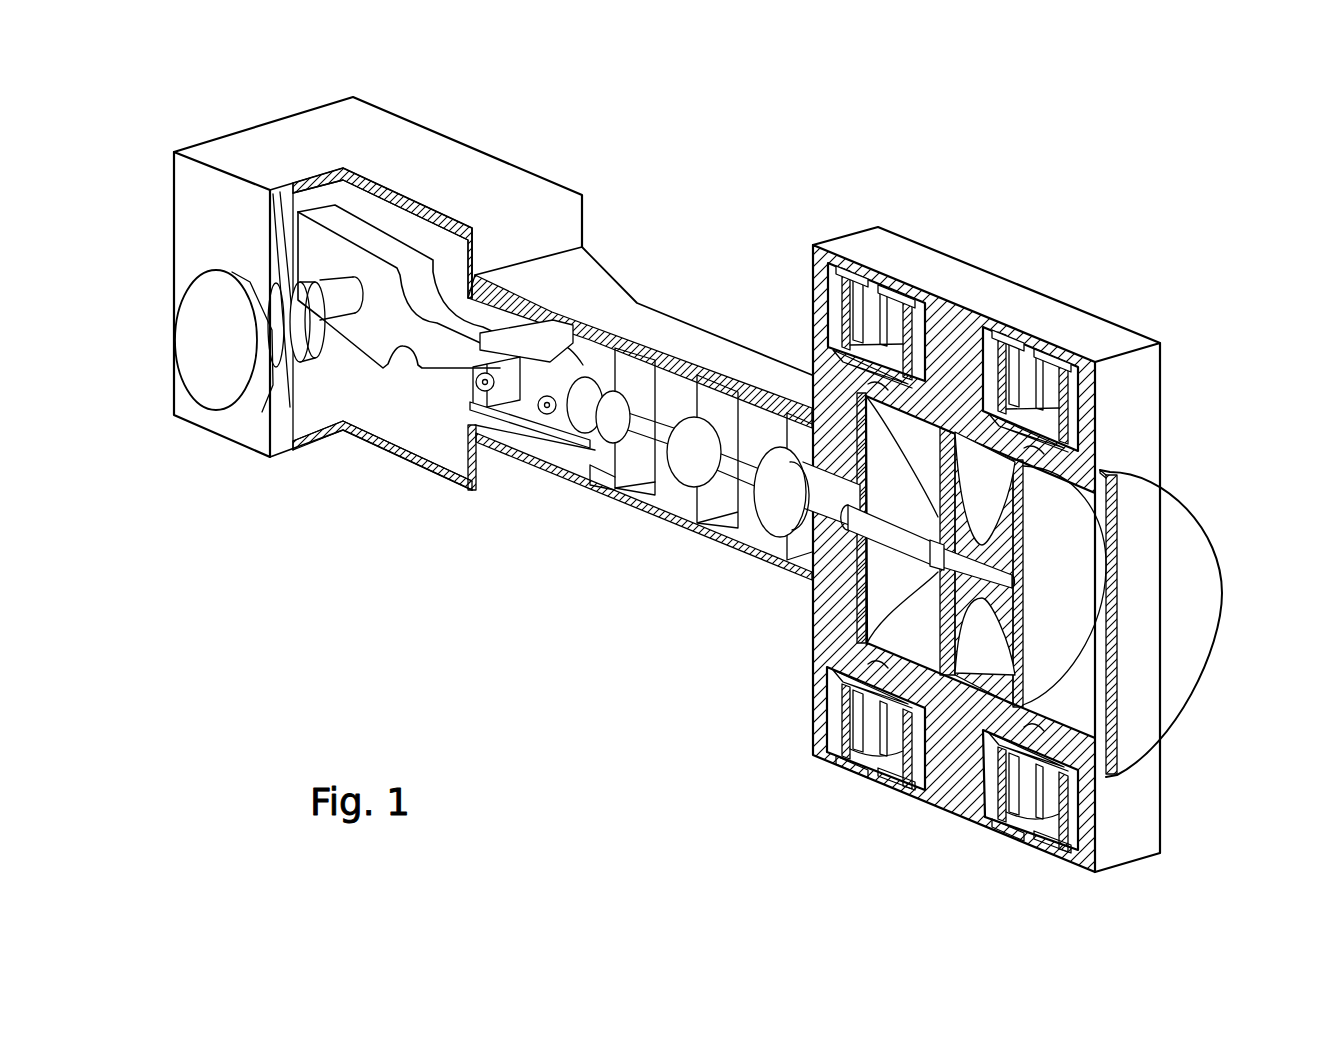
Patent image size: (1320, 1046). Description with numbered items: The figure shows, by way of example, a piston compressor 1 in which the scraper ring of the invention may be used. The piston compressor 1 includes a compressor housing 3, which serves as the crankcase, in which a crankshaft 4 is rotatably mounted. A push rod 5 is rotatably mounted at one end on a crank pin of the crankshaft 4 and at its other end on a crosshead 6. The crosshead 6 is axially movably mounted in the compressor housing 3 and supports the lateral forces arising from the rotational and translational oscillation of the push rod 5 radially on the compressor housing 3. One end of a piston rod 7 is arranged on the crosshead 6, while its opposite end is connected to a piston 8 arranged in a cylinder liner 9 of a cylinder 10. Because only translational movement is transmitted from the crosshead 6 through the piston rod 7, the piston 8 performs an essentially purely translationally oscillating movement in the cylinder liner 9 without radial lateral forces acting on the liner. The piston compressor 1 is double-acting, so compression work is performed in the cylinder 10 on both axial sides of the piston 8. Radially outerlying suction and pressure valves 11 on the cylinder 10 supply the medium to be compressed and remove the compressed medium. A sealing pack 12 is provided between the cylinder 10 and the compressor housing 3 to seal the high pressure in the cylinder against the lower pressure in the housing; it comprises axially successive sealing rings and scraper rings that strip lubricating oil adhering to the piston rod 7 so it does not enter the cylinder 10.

The piston compressor 1 is at (762, 114).
The compressor housing 3 is at (468, 183).
The crankshaft 4 is at (220, 365).
The push rod 5 is at (462, 352).
The crosshead 6 is at (524, 393).
The piston rod 7 is at (650, 427).
The piston 8 is at (1057, 598).
The cylinder liner 9 is at (927, 632).
The cylinder 10 is at (957, 778).
The suction and pressure valves 11 is at (1028, 378).
The sealing pack 12 is at (827, 500).